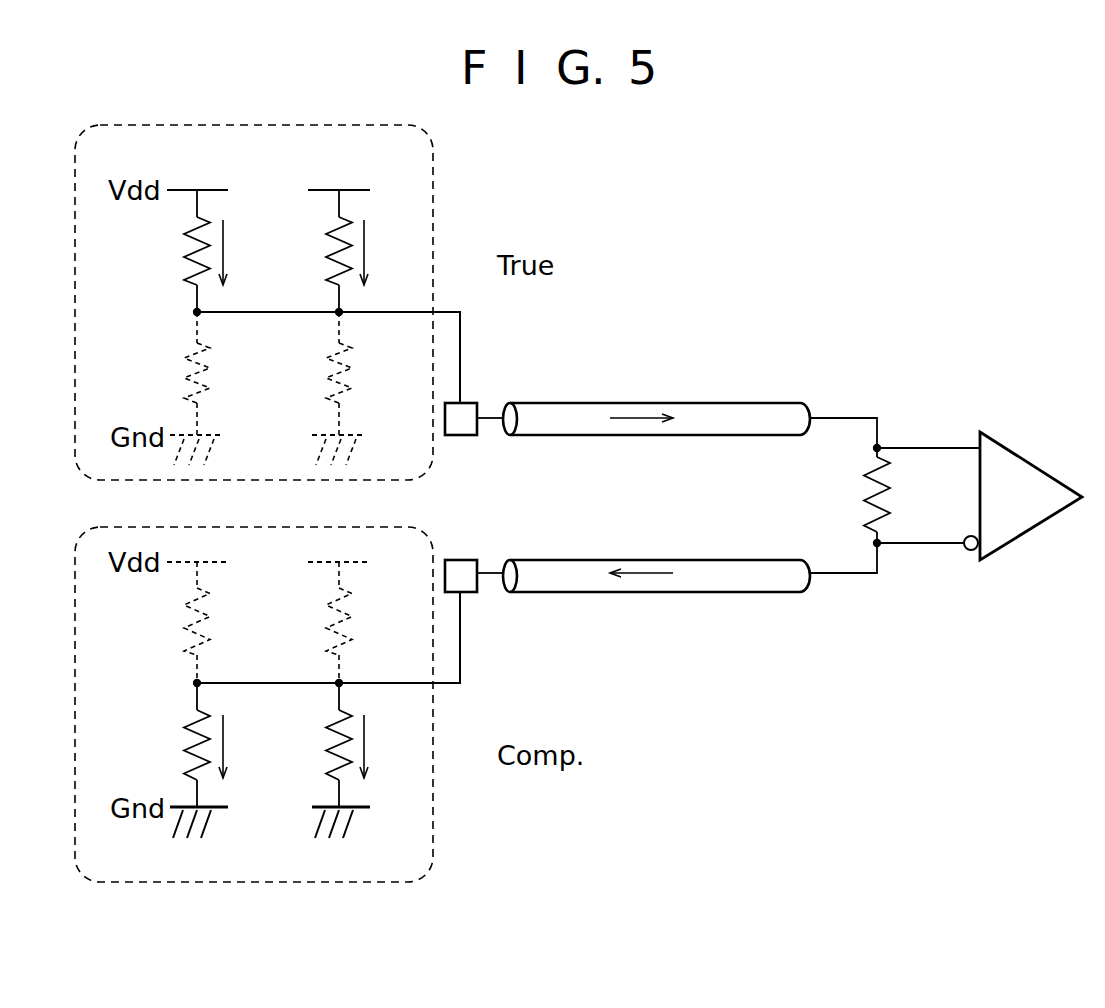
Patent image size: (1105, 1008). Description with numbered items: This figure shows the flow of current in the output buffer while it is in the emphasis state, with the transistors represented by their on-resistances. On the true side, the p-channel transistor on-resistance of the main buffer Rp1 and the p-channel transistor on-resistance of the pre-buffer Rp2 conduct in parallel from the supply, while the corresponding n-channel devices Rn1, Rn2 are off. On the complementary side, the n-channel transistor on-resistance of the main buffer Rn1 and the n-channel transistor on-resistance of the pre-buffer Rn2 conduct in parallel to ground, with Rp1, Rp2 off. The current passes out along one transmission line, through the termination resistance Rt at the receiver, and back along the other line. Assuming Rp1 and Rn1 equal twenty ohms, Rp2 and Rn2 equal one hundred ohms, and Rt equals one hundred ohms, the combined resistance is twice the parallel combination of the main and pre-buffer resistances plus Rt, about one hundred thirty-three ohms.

The p-channel transistor on-resistance of the main buffer Rp1 is at (224, 436).
The p-channel transistor on-resistance of the pre-buffer Rp2 is at (366, 436).
The n-channel transistor on-resistance of the main buffer Rn1 is at (226, 575).
The n-channel transistor on-resistance of the pre-buffer Rn2 is at (368, 575).
The termination resistance Rt is at (893, 496).